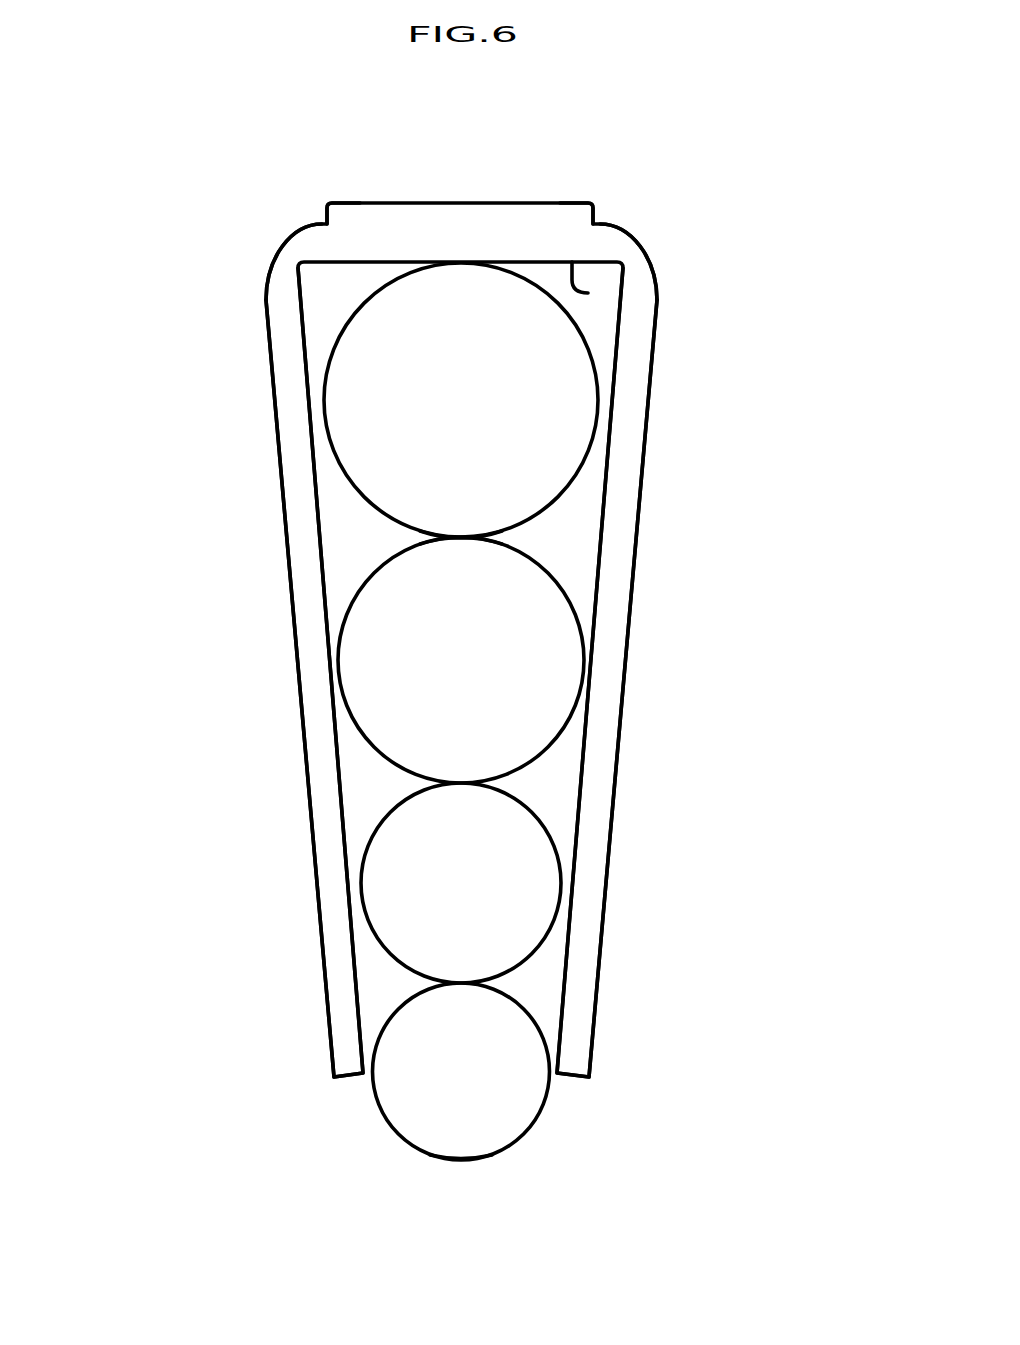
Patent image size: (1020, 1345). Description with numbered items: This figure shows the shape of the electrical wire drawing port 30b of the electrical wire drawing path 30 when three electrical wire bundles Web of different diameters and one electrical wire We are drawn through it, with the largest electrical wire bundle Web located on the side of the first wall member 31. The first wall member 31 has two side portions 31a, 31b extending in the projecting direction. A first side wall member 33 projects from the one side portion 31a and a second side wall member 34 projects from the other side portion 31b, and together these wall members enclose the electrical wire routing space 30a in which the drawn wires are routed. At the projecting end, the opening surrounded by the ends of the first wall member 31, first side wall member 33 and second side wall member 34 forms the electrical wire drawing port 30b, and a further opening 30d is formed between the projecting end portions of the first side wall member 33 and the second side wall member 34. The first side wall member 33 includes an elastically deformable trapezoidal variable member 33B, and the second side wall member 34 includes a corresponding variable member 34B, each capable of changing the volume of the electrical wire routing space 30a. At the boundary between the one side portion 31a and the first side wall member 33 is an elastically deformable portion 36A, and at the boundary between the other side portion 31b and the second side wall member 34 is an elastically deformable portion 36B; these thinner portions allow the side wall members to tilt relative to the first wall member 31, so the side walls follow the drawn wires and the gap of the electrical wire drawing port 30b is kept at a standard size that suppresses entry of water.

The electrical wire drawing path 30 is at (463, 577).
The first wall member 31 is at (588, 293).
The one side portion 31a is at (318, 207).
The other side portion 31b is at (604, 207).
The first side wall member 33 is at (202, 672).
The variable member 33B is at (270, 356).
The second side wall member 34 is at (720, 672).
The variable member 34B is at (652, 356).
The elastically deformable portion 36A is at (280, 245).
The elastically deformable portion 36B is at (642, 245).
The electrical wire routing space 30a is at (525, 538).
The electrical wire drawing port 30b is at (572, 571).
The opening 30d is at (506, 1065).
The electrical wire bundle Web is at (578, 411).
The electrical wire We is at (527, 1053).